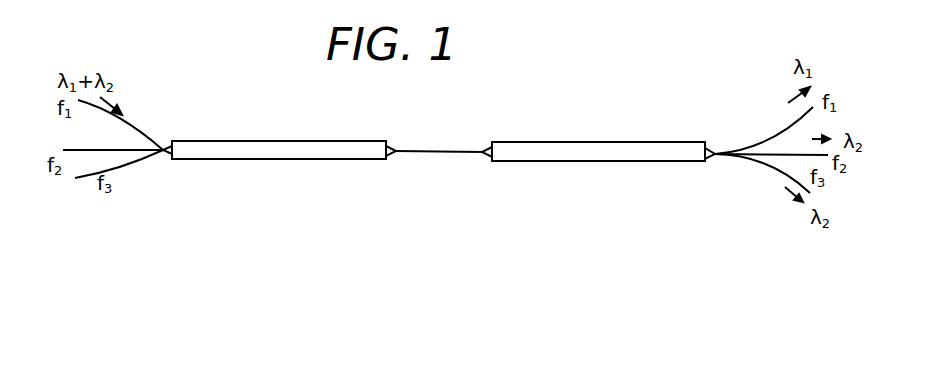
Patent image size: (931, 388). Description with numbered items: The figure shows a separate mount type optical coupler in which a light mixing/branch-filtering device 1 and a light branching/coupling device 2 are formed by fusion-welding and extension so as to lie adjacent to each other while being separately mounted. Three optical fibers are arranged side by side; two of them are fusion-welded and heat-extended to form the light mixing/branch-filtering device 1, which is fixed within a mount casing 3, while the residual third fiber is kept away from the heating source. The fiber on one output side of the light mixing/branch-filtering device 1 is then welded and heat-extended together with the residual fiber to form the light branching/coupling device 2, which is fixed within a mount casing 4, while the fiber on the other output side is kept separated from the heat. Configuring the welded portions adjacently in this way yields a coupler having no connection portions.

The light mixing/branch-filtering device 1 is at (308, 161).
The light branching/coupling device 2 is at (636, 164).
The mount casing 3 is at (303, 140).
The mount casing 4 is at (628, 143).